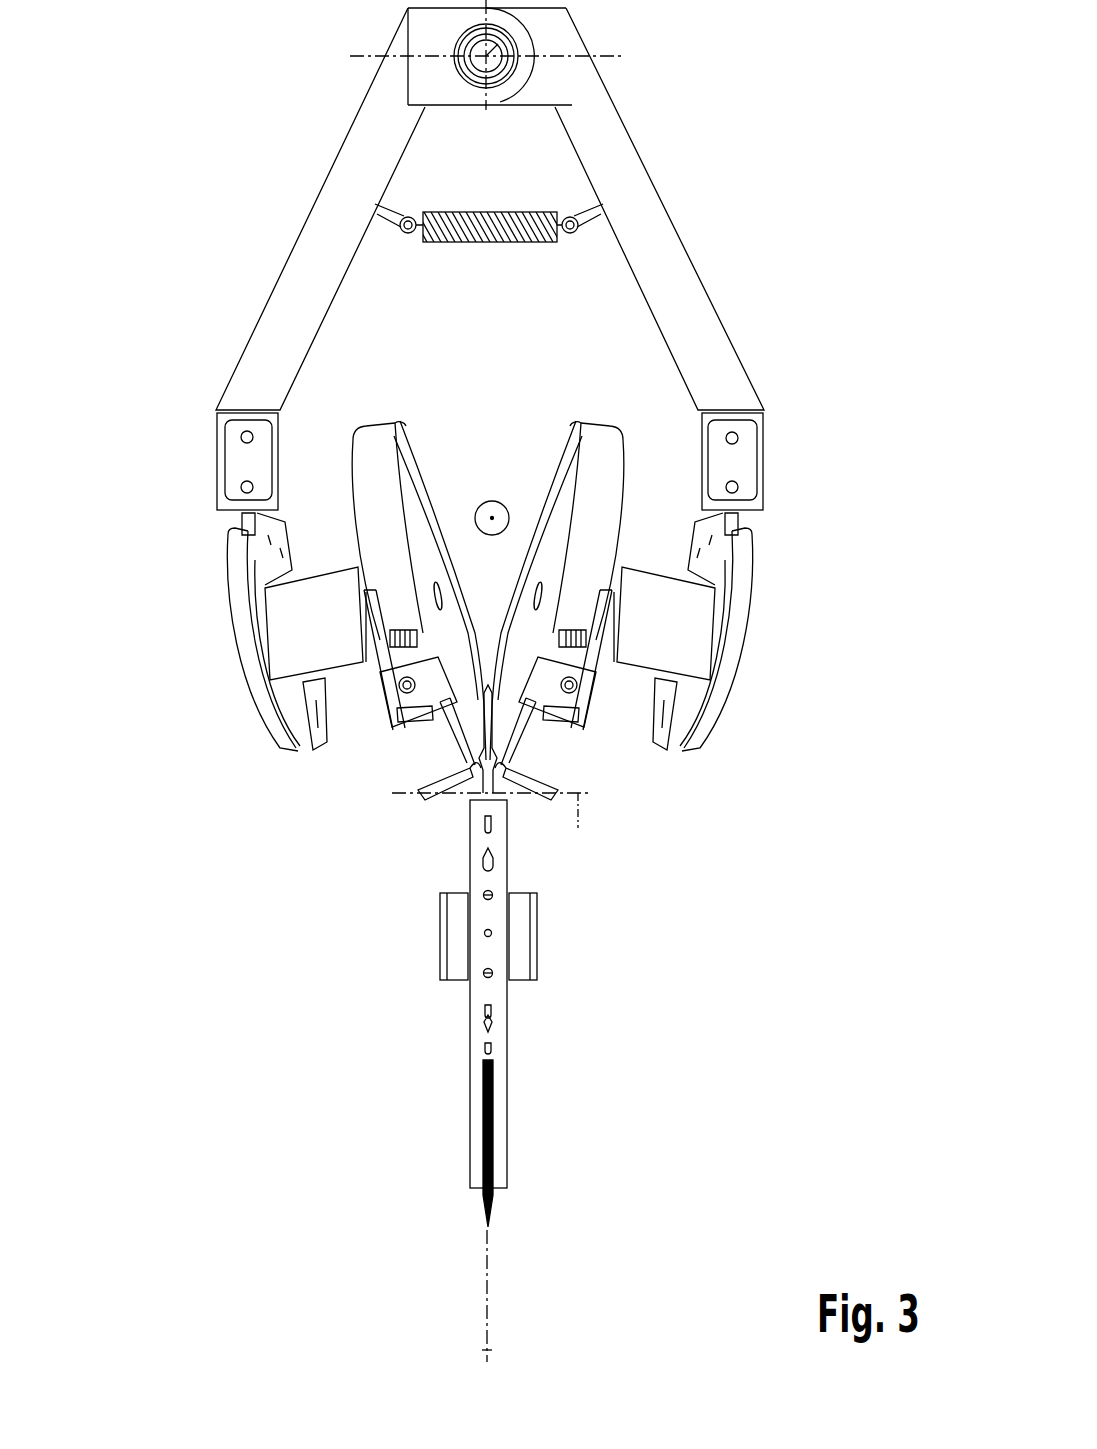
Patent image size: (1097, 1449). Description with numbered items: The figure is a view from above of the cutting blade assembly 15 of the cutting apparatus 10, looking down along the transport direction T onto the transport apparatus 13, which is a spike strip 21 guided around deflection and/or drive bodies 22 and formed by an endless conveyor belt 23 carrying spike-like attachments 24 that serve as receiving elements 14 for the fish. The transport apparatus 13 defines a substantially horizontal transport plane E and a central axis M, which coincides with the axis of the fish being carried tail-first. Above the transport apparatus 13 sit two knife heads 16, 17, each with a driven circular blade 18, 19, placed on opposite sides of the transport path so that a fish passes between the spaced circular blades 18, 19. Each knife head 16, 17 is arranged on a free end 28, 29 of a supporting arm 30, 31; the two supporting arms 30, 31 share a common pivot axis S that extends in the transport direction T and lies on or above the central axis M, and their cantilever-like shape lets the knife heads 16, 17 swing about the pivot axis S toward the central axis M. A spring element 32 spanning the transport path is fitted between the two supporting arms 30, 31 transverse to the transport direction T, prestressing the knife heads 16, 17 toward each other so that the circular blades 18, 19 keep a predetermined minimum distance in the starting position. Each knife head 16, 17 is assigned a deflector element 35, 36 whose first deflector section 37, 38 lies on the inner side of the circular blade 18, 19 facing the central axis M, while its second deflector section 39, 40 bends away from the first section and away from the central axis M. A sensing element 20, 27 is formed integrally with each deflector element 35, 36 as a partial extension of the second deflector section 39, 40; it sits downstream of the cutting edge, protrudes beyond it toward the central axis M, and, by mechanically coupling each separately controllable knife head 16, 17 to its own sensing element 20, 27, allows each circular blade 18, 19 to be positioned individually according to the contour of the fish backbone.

The cutting apparatus 10 is at (613, 90).
The transport apparatus 13 is at (558, 1168).
The receiving element 14 is at (495, 887).
The cutting blade assembly 15 is at (466, 632).
The knife head 16 is at (225, 672).
The knife head 17 is at (750, 672).
The circular blade 18 is at (410, 420).
The circular blade 19 is at (566, 420).
The sensing element 20 is at (486, 800).
The spike strip 21 is at (489, 994).
The deflection and/or drive bodies 22 is at (450, 937).
The endless conveyor belt 23 is at (500, 1005).
The spike-like attachments 24 is at (483, 865).
The sensing element 27 is at (482, 697).
The free end 28 is at (222, 507).
The free end 29 is at (757, 510).
The supporting arm 30 is at (346, 162).
The supporting arm 31 is at (622, 142).
The spring element 32 is at (493, 240).
The deflector element 35 is at (388, 692).
The deflector element 36 is at (589, 692).
The first deflector section 37 is at (458, 714).
The first deflector section 38 is at (598, 715).
The second deflector section 39 is at (441, 779).
The second deflector section 40 is at (535, 779).
The pivot axis S is at (477, 90).
The transport direction T is at (492, 501).
The transport plane E is at (580, 829).
The central axis M is at (493, 1351).